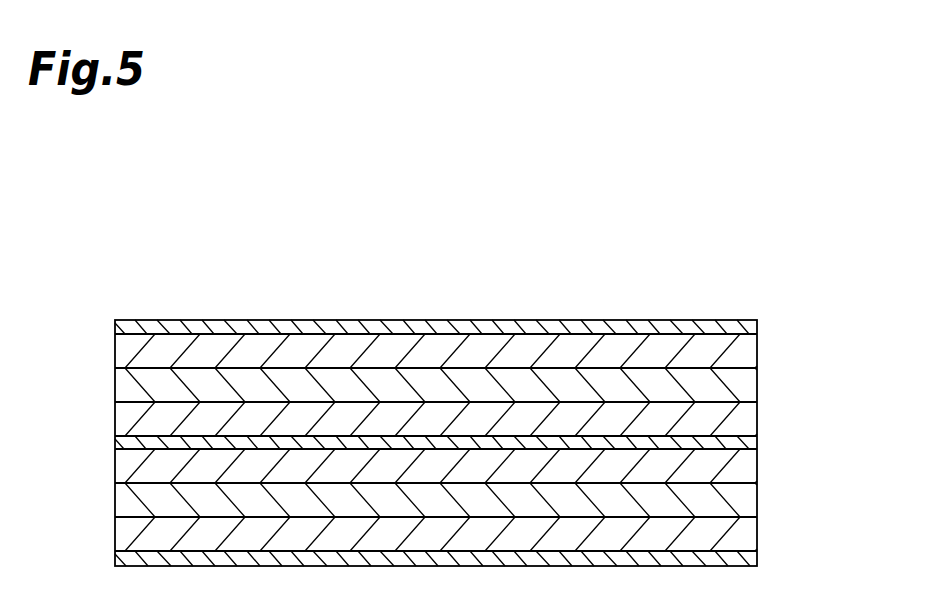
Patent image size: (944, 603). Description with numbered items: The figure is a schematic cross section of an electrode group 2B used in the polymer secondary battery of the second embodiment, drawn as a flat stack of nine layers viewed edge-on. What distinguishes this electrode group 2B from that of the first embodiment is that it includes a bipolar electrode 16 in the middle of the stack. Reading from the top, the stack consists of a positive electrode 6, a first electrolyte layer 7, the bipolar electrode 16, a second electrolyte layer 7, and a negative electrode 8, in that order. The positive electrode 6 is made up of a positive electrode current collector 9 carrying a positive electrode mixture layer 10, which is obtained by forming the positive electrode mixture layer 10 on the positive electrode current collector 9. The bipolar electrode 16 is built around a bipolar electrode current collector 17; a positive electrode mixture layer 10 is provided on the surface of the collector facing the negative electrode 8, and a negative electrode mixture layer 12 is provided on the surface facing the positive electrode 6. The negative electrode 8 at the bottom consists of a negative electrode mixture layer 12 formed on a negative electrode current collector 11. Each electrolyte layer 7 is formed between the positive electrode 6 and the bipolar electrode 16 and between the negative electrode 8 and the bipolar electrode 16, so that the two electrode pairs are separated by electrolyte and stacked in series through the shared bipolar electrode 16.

The electrode group 2B is at (708, 270).
The positive electrode 6 is at (822, 315).
The positive electrode current collector 9 is at (757, 324).
The positive electrode mixture layer 10 is at (757, 350).
The electrolyte layer 7 is at (757, 386).
The negative electrode mixture layer 12 is at (757, 418).
The bipolar electrode current collector 17 is at (757, 442).
The bipolar electrode 16 is at (822, 405).
The negative electrode current collector 11 is at (757, 558).
The negative electrode 8 is at (822, 524).